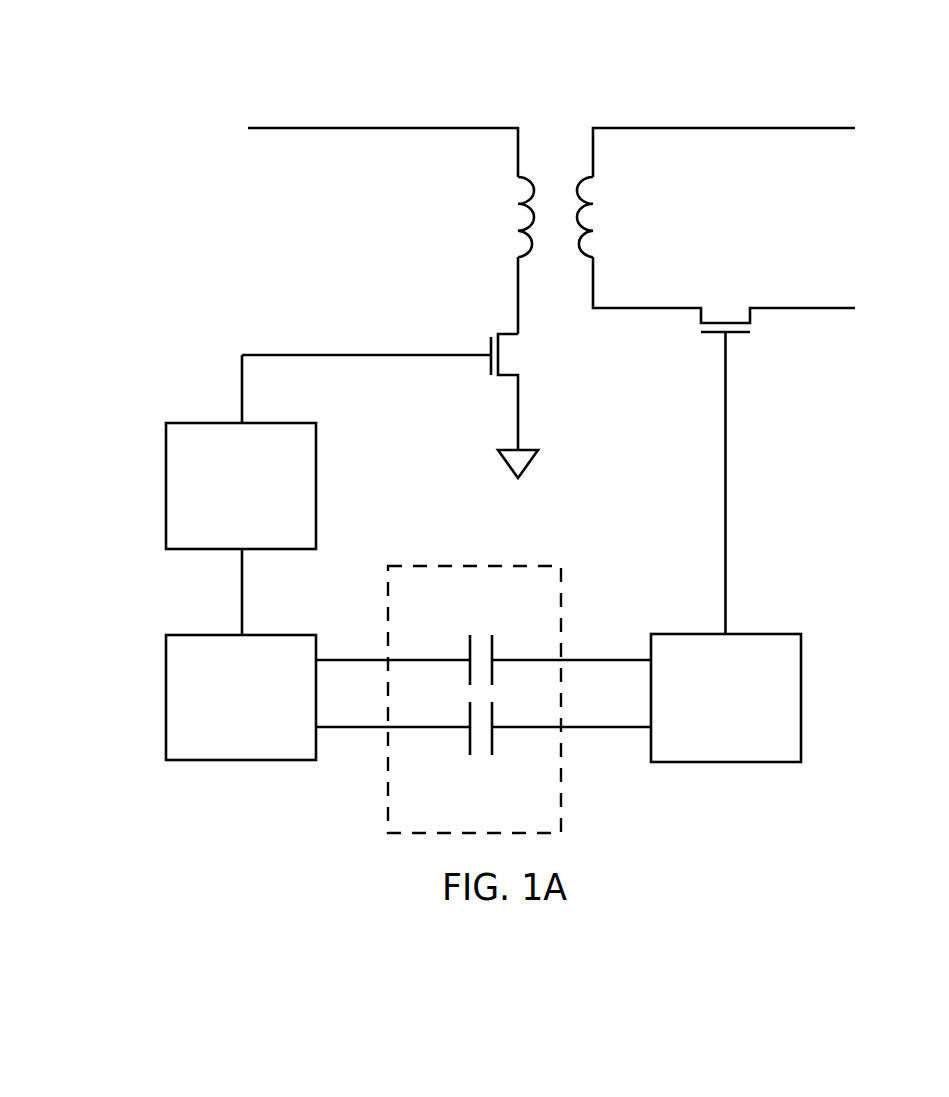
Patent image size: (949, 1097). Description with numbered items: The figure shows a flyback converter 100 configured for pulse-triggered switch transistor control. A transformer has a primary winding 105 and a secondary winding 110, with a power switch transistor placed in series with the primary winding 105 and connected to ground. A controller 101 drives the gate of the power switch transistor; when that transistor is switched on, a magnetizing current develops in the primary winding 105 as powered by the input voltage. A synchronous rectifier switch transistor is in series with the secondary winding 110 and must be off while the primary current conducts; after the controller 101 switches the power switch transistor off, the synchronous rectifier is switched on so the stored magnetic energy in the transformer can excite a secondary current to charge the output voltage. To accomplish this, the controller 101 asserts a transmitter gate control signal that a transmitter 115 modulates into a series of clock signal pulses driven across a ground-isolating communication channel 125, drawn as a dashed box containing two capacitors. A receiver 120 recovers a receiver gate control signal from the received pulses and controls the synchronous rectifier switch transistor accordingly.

The flyback converter 100 is at (583, 48).
The controller 101 is at (166, 483).
The primary winding 105 is at (518, 217).
The secondary winding 110 is at (592, 217).
The transmitter 115 is at (166, 702).
The receiver 120 is at (801, 695).
The ground-isolating communication channel 125 is at (454, 566).